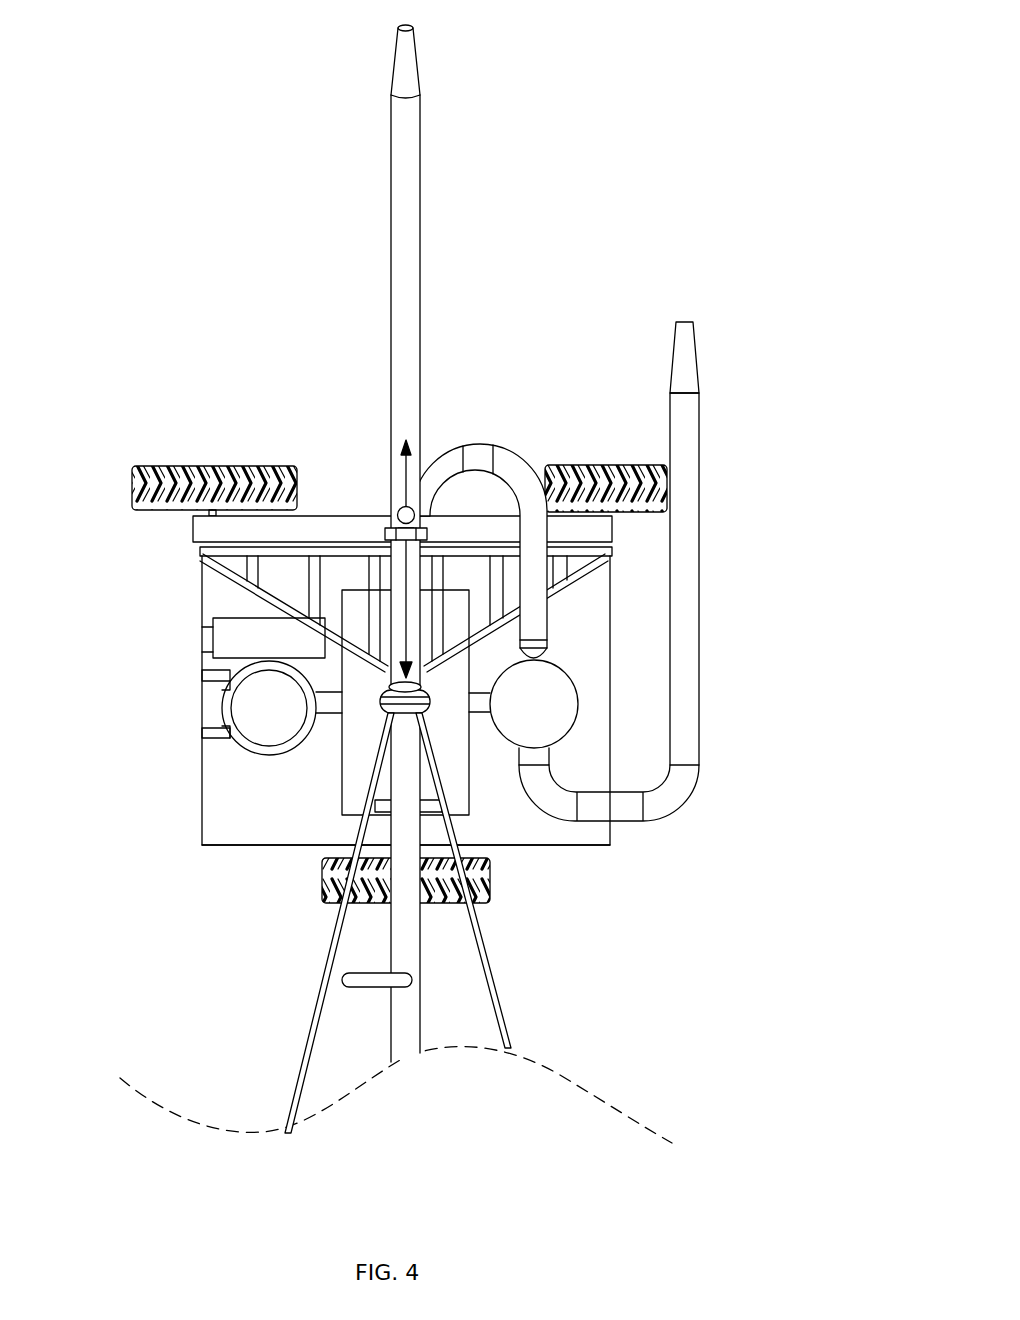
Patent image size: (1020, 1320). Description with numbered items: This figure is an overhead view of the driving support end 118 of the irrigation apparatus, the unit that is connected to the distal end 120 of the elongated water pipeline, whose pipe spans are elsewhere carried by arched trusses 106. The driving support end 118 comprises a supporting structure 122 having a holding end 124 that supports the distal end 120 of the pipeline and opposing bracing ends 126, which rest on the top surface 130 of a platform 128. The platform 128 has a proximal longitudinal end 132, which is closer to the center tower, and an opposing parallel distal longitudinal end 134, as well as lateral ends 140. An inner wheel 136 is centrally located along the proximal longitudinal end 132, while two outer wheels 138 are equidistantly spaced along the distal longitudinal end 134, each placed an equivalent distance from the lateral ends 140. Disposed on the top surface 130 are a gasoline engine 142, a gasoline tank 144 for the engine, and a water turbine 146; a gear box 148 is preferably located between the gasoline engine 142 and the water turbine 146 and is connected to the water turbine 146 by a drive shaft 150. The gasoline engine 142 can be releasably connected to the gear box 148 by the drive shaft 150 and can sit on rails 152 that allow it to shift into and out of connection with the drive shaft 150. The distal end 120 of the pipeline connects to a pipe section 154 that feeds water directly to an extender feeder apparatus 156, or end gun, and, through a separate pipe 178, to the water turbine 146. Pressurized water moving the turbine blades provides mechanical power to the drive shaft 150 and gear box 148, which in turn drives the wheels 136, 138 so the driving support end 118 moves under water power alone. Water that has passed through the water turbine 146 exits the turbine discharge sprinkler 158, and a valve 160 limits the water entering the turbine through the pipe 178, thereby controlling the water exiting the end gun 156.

The arched truss 106 is at (312, 1000).
The driving support end 118 is at (598, 168).
The distal end 120 is at (410, 1033).
The supporting structure 122 is at (240, 583).
The holding end 124 is at (432, 670).
The bracing ends 126 is at (200, 560).
The platform 128 is at (203, 760).
The top surface 130 is at (300, 794).
The proximal longitudinal end 132 is at (240, 848).
The distal longitudinal end 134 is at (358, 516).
The inner wheel 136 is at (488, 880).
The outer wheels 138 is at (188, 463).
The lateral ends 140 is at (220, 694).
The gasoline engine 142 is at (290, 719).
The gasoline tank 144 is at (242, 638).
The water turbine 146 is at (556, 719).
The gear box 148 is at (405, 702).
The drive shaft 150 is at (493, 662).
The rails 152 is at (222, 733).
The pipe section 154 is at (413, 478).
The extender feeder apparatus 156 is at (415, 172).
The turbine discharge sprinkler 158 is at (683, 375).
The valve 160 is at (413, 500).
The pipe 178 is at (527, 565).